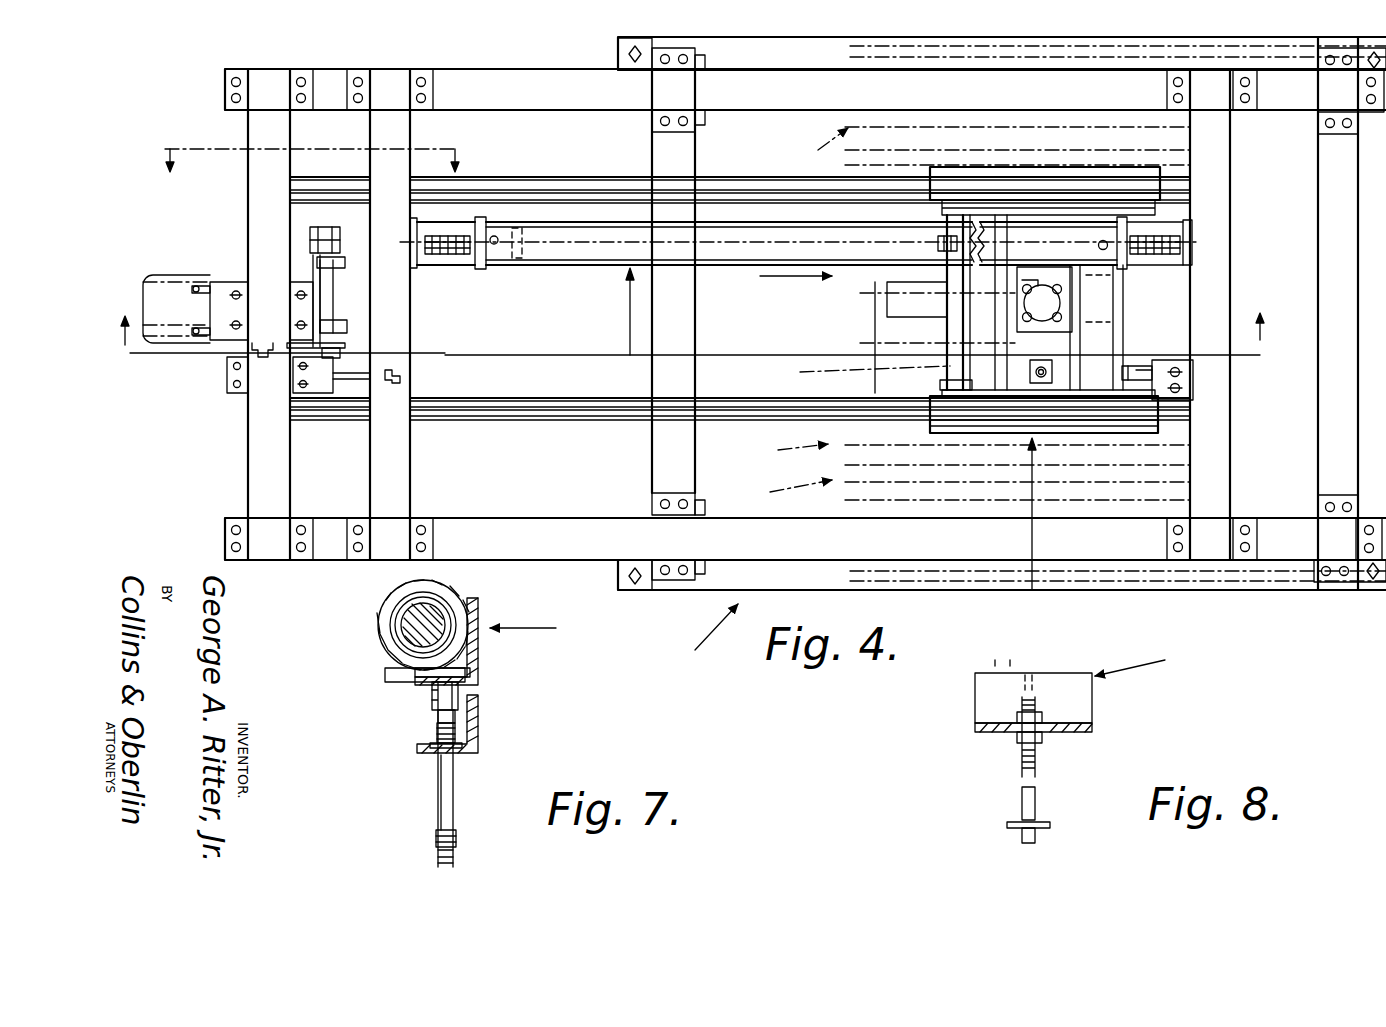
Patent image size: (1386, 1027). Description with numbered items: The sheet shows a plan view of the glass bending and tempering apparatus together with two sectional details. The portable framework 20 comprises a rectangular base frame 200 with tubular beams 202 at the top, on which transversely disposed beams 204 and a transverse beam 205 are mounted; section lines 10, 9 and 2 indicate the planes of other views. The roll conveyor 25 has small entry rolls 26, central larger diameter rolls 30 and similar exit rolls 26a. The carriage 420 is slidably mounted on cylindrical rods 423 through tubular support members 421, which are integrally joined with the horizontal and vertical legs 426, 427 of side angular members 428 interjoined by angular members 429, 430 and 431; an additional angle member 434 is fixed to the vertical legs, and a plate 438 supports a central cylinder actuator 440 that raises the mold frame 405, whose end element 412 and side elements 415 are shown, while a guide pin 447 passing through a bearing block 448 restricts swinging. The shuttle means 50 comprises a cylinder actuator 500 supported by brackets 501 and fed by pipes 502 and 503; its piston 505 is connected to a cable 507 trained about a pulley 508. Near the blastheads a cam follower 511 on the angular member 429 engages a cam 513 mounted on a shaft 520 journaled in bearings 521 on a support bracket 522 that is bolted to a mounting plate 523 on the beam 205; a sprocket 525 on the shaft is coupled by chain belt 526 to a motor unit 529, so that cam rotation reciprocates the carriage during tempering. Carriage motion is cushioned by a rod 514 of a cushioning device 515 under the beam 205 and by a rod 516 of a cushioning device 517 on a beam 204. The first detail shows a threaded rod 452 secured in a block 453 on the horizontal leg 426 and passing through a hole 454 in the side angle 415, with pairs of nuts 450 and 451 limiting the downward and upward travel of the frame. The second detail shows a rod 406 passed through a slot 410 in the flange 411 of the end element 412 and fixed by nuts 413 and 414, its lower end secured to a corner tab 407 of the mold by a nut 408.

In FIG. 4, the portable framework 20 is at (1246, 602).
In FIG. 4, the tubular members or beams 202 is at (500, 82).
In FIG. 4, the beams 204 is at (435, 126).
In FIG. 4, the transversely disposed beam 205 is at (262, 138).
In FIG. 4, the cylindrical rods 423 is at (748, 186).
In FIG. 7, the cylindrical rods 423 is at (420, 625).
In FIG. 4, the section line 10- 10 is at (325, 157).
In FIG. 4, the section line 9- 9 is at (266, 340).
In FIG. 4, the section line 2- 2 is at (1252, 341).
In FIG. 4, the means for moving the bending unit shuttle-wise 50 is at (628, 328).
In FIG. 4, the larger diameter rolls 30 is at (858, 372).
In FIG. 4, the carriage 420 is at (1023, 530).
In FIG. 4, the relatively small diameter rolls 26 is at (785, 449).
In FIG. 4, the roll conveyor 25 is at (783, 492).
In FIG. 4, the rolls 26a is at (811, 152).
In FIG. 4, the base frame 200 is at (692, 638).
In FIG. 4, the frame 405 is at (773, 277).
In FIG. 8, the frame 405 is at (1153, 662).
In FIG. 4, the cable 507 is at (556, 242).
In FIG. 4, the cylinder actuator 500 is at (545, 266).
In FIG. 4, the pipe 502 is at (494, 230).
In FIG. 4, the piston 505 is at (518, 266).
In FIG. 4, the brackets 501 is at (455, 262).
In FIG. 4, the pulley 508 is at (428, 230).
In FIG. 4, the pipe 503 is at (1100, 240).
In FIG. 4, the cam follower 511 is at (940, 238).
In FIG. 4, the tubular support members 421 is at (1015, 182).
In FIG. 7, the tubular support members 421 is at (382, 636).
In FIG. 4, the angular side elements 415 is at (931, 302).
In FIG. 7, the angular side elements 415 is at (480, 718).
In FIG. 4, the angular member 430 is at (998, 296).
In FIG. 4, the angular member 429 is at (893, 304).
In FIG. 4, the angular end element 412 is at (853, 343).
In FIG. 8, the angular end element 412 is at (1085, 696).
In FIG. 4, the vertical flange or leg 427 is at (942, 386).
In FIG. 7, the vertical flange or leg 427 is at (480, 653).
In FIG. 4, the plate 438 is at (1062, 296).
In FIG. 4, the angular member 431 is at (1080, 300).
In FIG. 4, the angle member 434 is at (1100, 322).
In FIG. 4, the cylinder actuator 440 is at (1042, 318).
In FIG. 4, the guide pin 447 is at (1030, 382).
In FIG. 4, the bearing block 448 is at (1045, 382).
In FIG. 4, the rod 516 is at (1143, 357).
In FIG. 4, the cushioning device 517 is at (1158, 366).
In FIG. 4, the motor unit 529 is at (166, 287).
In FIG. 4, the mounting plate 523 is at (240, 290).
In FIG. 4, the shaft 520 is at (330, 292).
In FIG. 4, the support bracket 522 is at (313, 262).
In FIG. 4, the bearings 521 is at (330, 327).
In FIG. 4, the cam 513 is at (325, 240).
In FIG. 4, the sprocket 525 is at (340, 350).
In FIG. 4, the chain belt 526 is at (305, 350).
In FIG. 4, the cushioning device 515 is at (322, 392).
In FIG. 4, the rod 514 is at (400, 372).
In FIG. 7, the side angular members 428 is at (546, 629).
In FIG. 7, the horizontal flange or leg 426 is at (422, 680).
In FIG. 7, the block 453 is at (462, 688).
In FIG. 7, the nuts 451 is at (436, 735).
In FIG. 7, the threaded rod 452 is at (445, 780).
In FIG. 7, the hole 454 is at (468, 752).
In FIG. 7, the nuts 450 is at (440, 840).
In FIG. 8, the nut 413 is at (1040, 712).
In FIG. 8, the flange 411 is at (1075, 734).
In FIG. 8, the slots 410 is at (1046, 735).
In FIG. 8, the nut 414 is at (1016, 739).
In FIG. 8, the rods 406 is at (1025, 804).
In FIG. 8, the corner tabs 407 is at (1008, 825).
In FIG. 8, the nuts 408 is at (1022, 836).